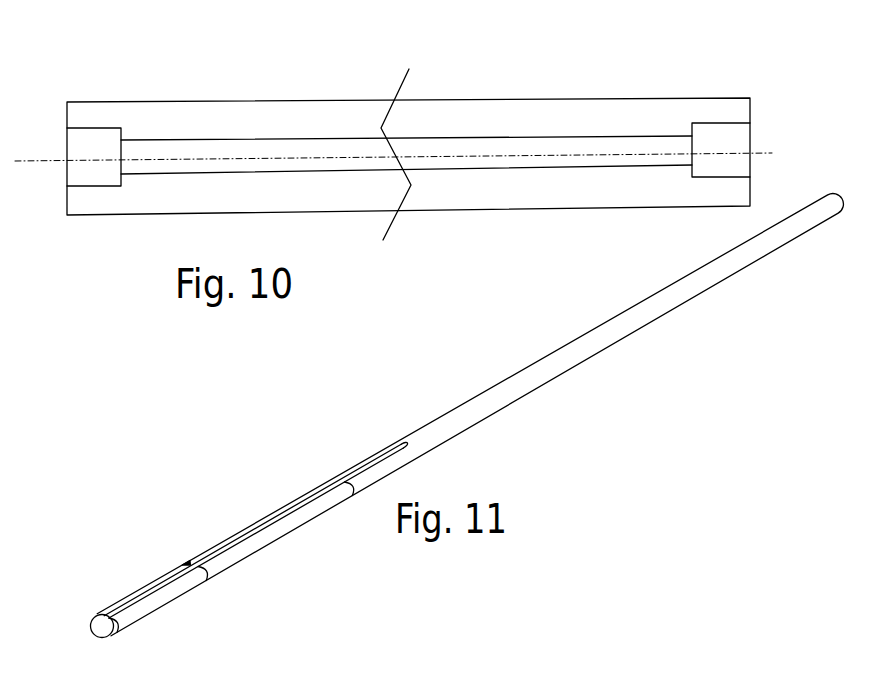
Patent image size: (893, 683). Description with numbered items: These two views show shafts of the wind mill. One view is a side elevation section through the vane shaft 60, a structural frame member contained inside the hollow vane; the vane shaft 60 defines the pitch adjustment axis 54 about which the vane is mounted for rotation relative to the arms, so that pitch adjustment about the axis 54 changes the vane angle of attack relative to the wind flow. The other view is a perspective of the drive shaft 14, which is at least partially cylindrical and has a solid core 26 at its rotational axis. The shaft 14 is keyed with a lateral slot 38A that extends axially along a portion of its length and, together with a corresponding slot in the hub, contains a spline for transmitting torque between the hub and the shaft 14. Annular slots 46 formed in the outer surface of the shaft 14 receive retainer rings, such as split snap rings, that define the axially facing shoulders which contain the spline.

In FIG. 10, the vane shaft 60 is at (567, 97).
In FIG. 10, the pitch adjustment axis 54 is at (660, 153).
In FIG. 11, the shaft 14 is at (650, 306).
In FIG. 11, the solid core 26 is at (570, 362).
In FIG. 11, the lateral slot 38A is at (150, 583).
In FIG. 11, the annular slots 46 is at (110, 612).